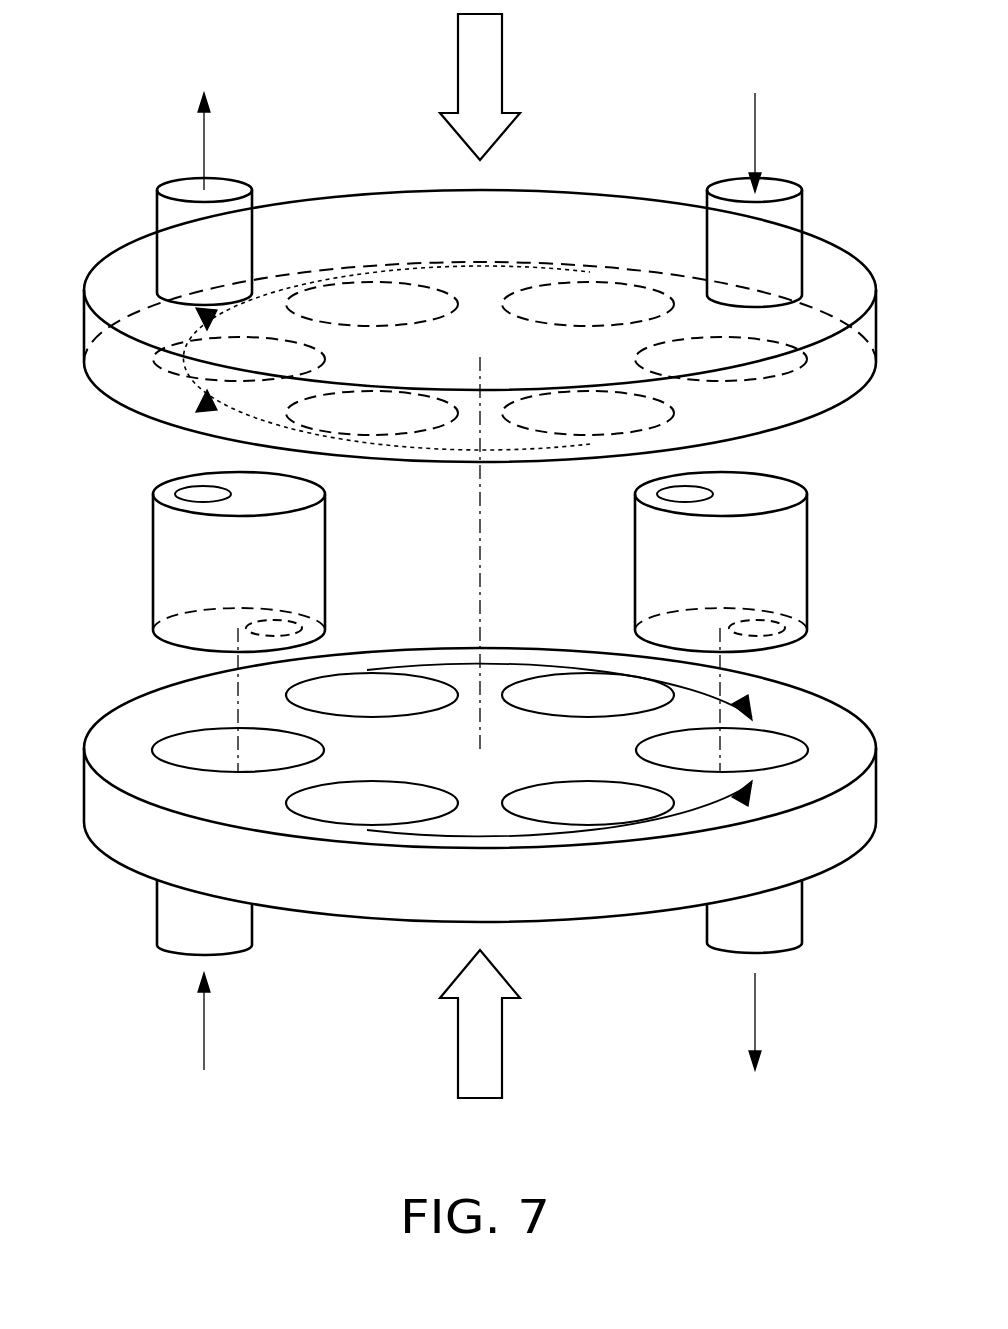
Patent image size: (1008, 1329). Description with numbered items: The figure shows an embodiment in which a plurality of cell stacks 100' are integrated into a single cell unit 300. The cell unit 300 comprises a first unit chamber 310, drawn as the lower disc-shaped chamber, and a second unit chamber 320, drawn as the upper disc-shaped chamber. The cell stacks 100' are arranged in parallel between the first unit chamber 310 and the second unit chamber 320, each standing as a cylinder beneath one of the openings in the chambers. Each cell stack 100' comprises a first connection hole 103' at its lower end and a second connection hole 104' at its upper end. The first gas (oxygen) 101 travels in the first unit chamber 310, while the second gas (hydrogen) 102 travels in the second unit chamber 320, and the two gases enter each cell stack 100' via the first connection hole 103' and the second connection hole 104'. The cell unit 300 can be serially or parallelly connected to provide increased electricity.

The cell unit 300 is at (122, 33).
The second unit chamber 320 is at (118, 380).
The first unit chamber 310 is at (118, 838).
The second gas (hydrogen) 102 is at (757, 137).
The first gas (oxygen) 101 is at (206, 1027).
The cell stack 100' is at (532, 622).
The second connection hole 104' is at (375, 500).
The first connection hole 103' is at (578, 614).